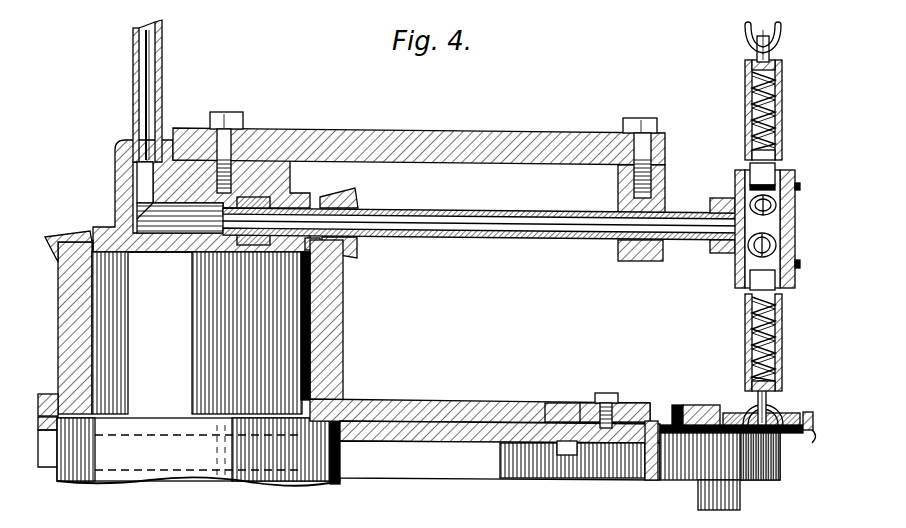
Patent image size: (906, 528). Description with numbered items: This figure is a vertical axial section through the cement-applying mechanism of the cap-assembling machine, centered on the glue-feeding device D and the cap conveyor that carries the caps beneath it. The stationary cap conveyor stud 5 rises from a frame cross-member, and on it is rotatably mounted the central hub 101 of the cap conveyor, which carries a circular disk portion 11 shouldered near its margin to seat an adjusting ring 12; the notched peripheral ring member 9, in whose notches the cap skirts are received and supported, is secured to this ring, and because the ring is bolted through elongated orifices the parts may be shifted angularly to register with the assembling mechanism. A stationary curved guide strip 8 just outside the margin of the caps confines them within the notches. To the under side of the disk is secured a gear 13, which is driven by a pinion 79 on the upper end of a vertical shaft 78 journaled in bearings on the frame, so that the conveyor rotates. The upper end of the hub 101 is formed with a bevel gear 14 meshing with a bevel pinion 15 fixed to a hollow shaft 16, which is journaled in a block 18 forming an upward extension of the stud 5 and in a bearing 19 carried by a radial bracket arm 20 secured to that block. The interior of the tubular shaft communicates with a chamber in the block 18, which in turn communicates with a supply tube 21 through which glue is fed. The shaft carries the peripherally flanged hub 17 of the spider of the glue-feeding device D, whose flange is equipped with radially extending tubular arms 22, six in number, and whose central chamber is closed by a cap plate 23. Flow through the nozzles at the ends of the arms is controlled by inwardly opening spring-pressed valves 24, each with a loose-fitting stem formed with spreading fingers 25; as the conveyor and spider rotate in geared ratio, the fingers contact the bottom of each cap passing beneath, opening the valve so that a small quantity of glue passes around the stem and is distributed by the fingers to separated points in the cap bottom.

The cap conveyor stud 5 is at (148, 381).
The curved guide strip 8 is at (812, 432).
The notched peripheral ring member 9 is at (713, 406).
The central hub 101 is at (327, 342).
The circular disk portion 11 is at (473, 407).
The adjusting ring 12 is at (643, 403).
The gear 13 is at (652, 481).
The bevel gear 14 is at (63, 240).
The bevel pinion 15 is at (356, 192).
The hollow shaft 16 is at (490, 238).
The hub of the spider 17 is at (718, 199).
The block 18 is at (165, 165).
The bearing 19 is at (606, 250).
The radial bracket arm 20 is at (462, 133).
The supply tube 21 is at (135, 67).
The tubular arms 22 is at (782, 121).
The cap plate 23 is at (789, 231).
The spring-pressed valves 24 is at (767, 380).
The spreading fingers 25 is at (772, 398).
The vertical shaft 78 is at (742, 500).
The pinion 79 is at (780, 470).
The glue-feeding device D is at (801, 176).